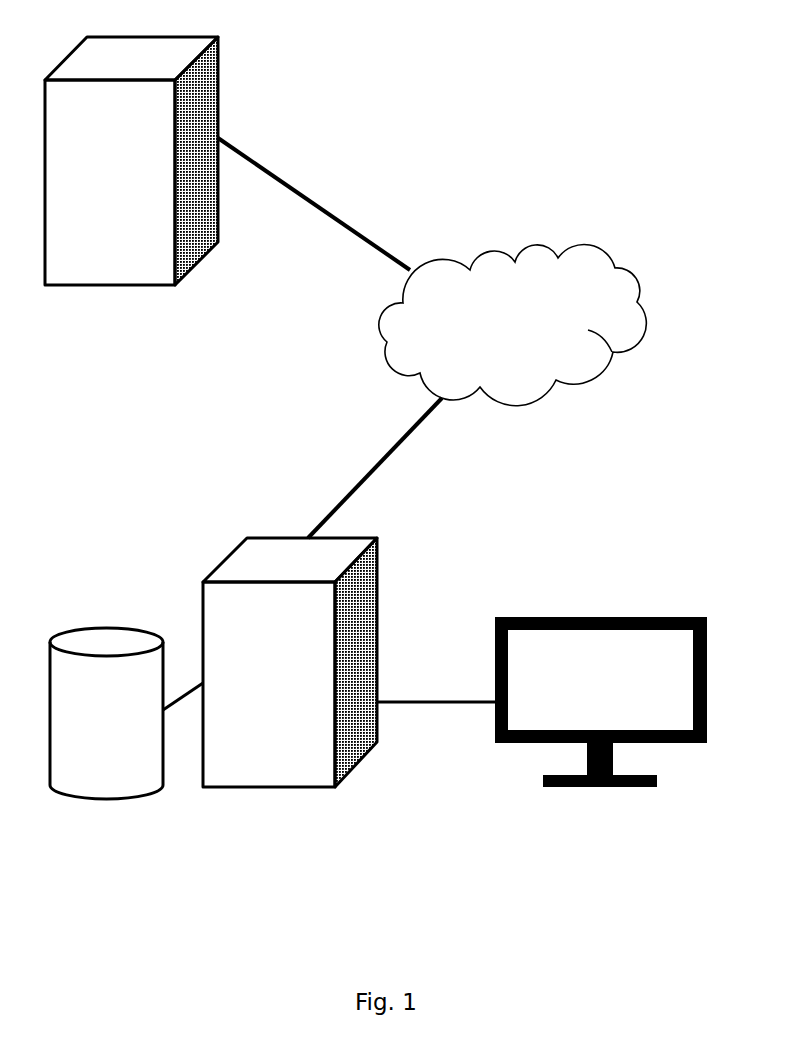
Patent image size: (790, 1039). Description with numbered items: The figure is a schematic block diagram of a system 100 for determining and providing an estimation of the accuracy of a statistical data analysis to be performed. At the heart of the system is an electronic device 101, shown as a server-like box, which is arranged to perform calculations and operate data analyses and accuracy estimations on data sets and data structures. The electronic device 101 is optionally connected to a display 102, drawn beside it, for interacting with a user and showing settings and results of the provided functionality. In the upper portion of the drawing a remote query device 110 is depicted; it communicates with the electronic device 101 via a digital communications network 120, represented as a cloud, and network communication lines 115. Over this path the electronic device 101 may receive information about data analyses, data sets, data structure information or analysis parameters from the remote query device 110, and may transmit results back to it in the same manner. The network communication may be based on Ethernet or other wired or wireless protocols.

The system 100 is at (542, 149).
The electronic device 101 is at (377, 605).
The display 102 is at (82, 628).
The remote query device 110 is at (218, 73).
The network communication lines 115 is at (290, 185).
The digital communications network 120 is at (592, 243).